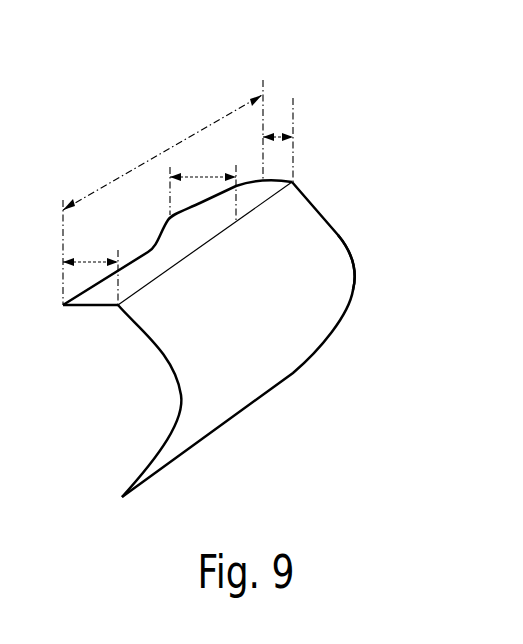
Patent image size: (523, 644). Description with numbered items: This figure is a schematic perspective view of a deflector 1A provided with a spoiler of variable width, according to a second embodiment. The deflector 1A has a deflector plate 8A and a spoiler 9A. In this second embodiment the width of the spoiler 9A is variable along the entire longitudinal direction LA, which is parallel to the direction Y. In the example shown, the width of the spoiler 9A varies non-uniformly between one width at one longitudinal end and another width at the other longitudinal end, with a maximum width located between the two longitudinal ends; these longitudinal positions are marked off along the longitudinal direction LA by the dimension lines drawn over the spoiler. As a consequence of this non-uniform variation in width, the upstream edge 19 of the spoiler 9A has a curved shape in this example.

The deflector 1A is at (330, 207).
The deflector plate 8A is at (355, 268).
The spoiler 9A is at (107, 307).
The upstream edge 19 is at (97, 306).
The longitudinal direction LA is at (147, 162).